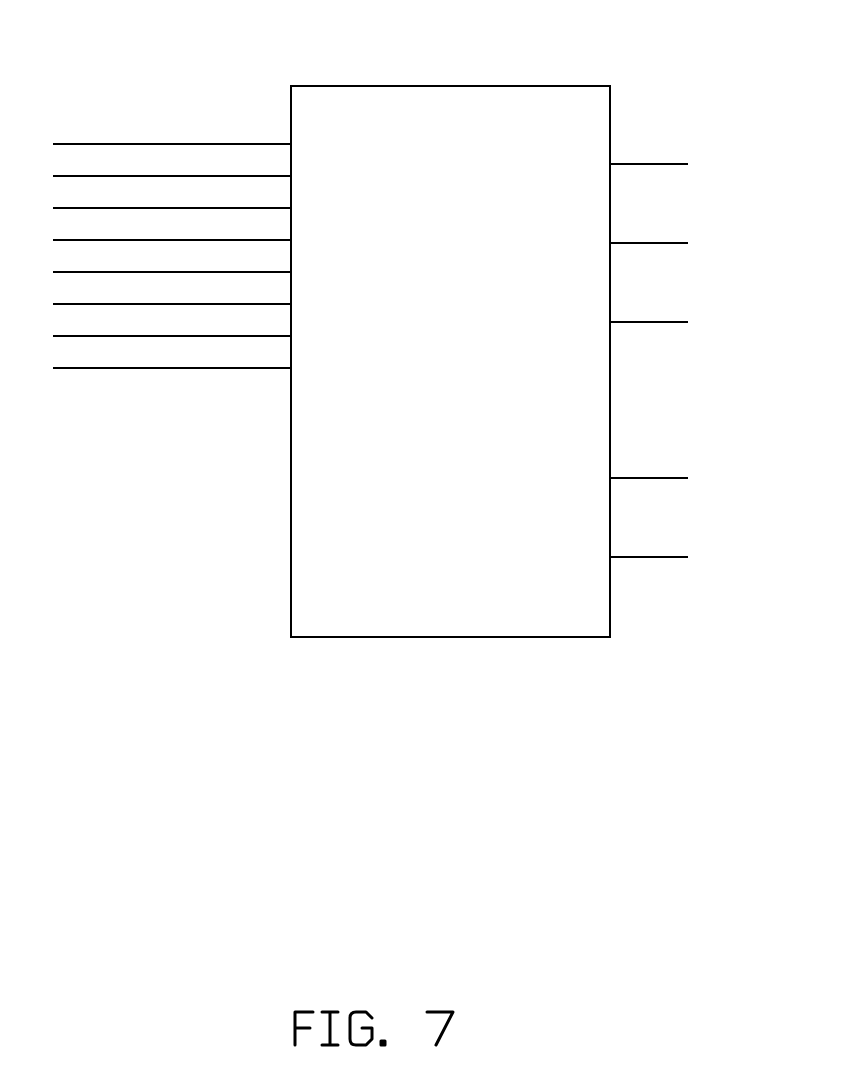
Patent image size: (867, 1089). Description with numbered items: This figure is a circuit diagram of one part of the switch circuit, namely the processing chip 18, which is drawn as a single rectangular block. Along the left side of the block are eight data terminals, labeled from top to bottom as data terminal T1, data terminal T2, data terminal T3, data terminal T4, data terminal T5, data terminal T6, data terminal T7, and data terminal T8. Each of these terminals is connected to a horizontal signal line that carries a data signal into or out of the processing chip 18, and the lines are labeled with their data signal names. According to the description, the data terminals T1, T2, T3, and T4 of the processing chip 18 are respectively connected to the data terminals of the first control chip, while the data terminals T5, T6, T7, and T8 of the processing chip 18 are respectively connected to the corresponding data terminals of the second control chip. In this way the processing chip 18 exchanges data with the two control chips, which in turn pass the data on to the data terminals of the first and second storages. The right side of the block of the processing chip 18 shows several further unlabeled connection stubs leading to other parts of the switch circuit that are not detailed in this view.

The processing chip 18 is at (485, 86).
The data terminal T1 is at (193, 139).
The data terminal T2 is at (193, 171).
The data terminal T3 is at (193, 203).
The data terminal T4 is at (193, 235).
The data terminal T5 is at (193, 267).
The data terminal T6 is at (193, 299).
The data terminal T7 is at (193, 331).
The data terminal T8 is at (193, 363).